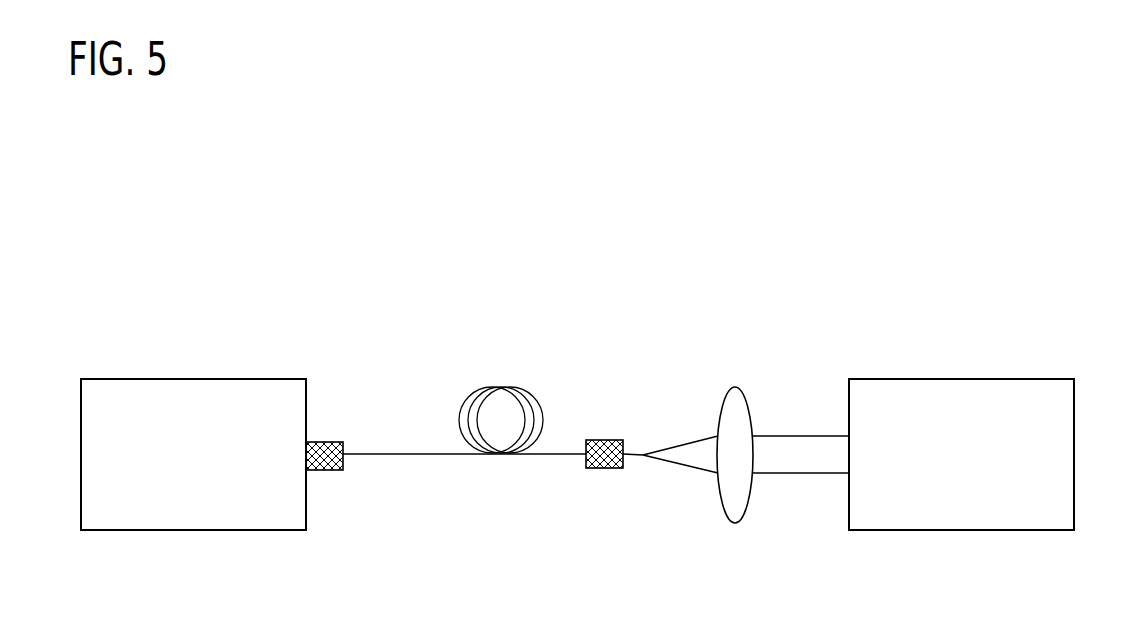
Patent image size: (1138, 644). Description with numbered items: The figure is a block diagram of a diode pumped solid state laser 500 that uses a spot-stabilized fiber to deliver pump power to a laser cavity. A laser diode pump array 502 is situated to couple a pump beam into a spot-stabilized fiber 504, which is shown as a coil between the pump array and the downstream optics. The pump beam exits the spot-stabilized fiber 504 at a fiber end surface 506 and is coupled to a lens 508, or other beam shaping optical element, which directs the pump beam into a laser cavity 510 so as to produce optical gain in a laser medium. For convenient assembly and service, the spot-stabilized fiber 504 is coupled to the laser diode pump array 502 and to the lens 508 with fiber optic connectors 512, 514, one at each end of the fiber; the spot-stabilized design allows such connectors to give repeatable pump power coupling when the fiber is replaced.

The diode pumped solid state laser 500 is at (580, 232).
The laser diode pump array 502 is at (268, 379).
The spot-stabilized fiber 504 is at (511, 388).
The fiber end surface 506 is at (643, 456).
The lens 508 is at (734, 388).
The laser cavity 510 is at (1022, 379).
The fiber optic connector 512 is at (322, 442).
The fiber optic connector 514 is at (604, 440).